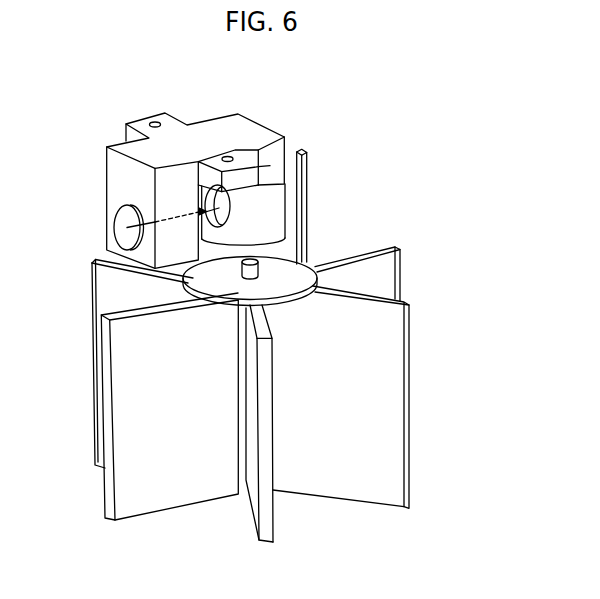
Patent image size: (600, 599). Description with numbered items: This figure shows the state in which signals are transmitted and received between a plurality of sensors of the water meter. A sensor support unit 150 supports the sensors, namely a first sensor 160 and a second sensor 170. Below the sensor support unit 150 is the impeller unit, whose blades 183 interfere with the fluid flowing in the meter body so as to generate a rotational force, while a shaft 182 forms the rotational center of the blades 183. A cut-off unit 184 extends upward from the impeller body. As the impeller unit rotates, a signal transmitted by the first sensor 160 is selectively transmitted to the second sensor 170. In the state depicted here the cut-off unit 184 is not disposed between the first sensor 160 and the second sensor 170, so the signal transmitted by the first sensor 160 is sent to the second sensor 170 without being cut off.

The sensor support unit 150 is at (188, 137).
The first sensor 160 is at (125, 227).
The second sensor 170 is at (223, 207).
The shaft 182 is at (250, 498).
The blades 183 is at (382, 388).
The cut-off unit 184 is at (304, 233).